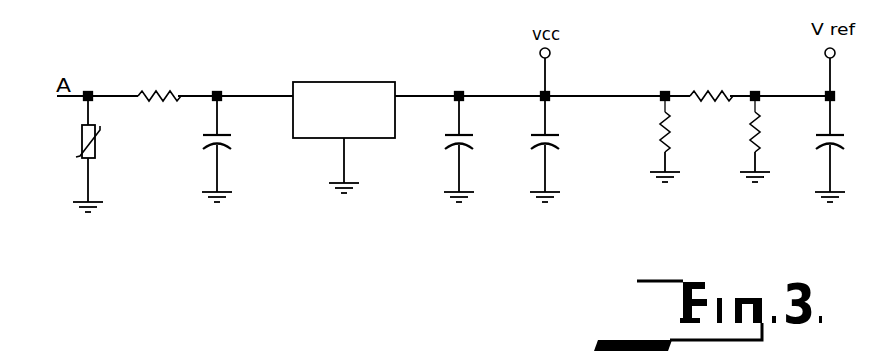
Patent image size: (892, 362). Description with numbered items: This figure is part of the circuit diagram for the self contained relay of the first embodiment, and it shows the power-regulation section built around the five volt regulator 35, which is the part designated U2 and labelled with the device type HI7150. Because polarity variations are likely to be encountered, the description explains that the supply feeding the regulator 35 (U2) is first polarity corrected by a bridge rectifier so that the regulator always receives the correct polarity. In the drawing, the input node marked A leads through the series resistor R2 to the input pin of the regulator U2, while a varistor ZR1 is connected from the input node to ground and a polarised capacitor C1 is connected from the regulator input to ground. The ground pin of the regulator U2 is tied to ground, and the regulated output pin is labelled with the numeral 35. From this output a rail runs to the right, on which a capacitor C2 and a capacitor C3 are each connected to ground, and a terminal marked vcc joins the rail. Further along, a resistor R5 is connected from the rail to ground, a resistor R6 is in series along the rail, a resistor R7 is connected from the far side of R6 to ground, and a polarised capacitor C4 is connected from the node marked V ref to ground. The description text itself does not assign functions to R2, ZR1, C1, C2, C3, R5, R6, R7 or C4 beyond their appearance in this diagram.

The 5 volt regulator 35 is at (373, 138).
The resistor R2 is at (159, 95).
The varistor ZR1 is at (106, 156).
The capacitor C1 is at (241, 150).
The 5 volt regulator U2 is at (344, 115).
The capacitor C2 is at (477, 150).
The capacitor C3 is at (586, 150).
The resistor R5 is at (682, 141).
The resistor R6 is at (708, 74).
The resistor R7 is at (774, 141).
The capacitor C4 is at (850, 150).